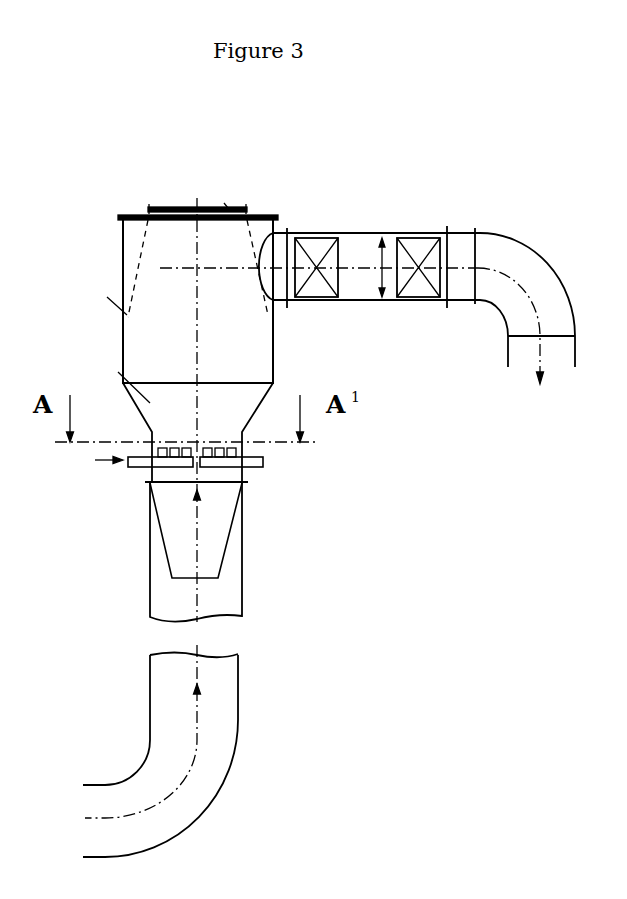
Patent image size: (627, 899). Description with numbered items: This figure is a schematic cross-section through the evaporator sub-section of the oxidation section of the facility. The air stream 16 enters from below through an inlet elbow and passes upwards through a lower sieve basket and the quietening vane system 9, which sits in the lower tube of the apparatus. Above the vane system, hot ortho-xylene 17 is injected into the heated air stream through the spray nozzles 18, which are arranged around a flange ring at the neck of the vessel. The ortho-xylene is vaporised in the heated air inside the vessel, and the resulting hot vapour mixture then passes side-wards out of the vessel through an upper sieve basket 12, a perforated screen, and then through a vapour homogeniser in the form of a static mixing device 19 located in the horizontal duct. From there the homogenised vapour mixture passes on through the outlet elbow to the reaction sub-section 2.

The upper sieve basket 12 is at (138, 263).
The static mixing device 19 is at (420, 242).
The reaction sub-section 2 is at (526, 338).
The hot ortho-xylene 17 is at (97, 460).
The spray nozzles 18 is at (152, 483).
The quietening vane system 9 is at (230, 538).
The air stream 16 is at (208, 677).